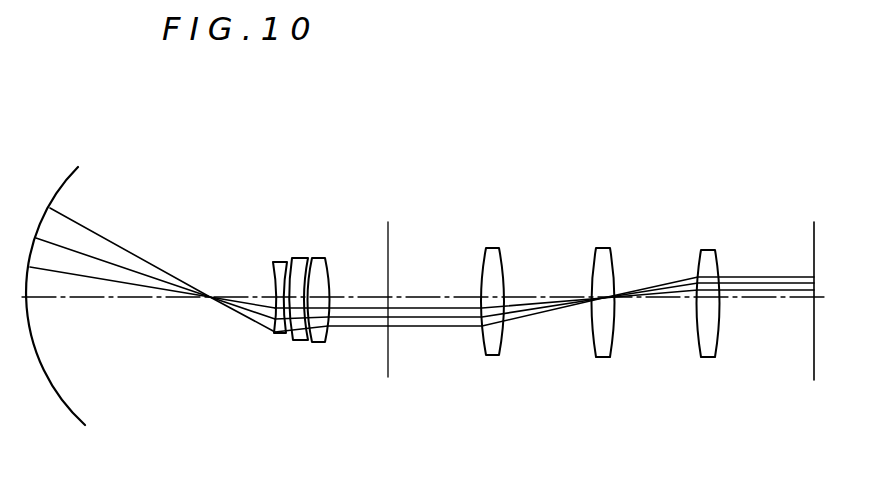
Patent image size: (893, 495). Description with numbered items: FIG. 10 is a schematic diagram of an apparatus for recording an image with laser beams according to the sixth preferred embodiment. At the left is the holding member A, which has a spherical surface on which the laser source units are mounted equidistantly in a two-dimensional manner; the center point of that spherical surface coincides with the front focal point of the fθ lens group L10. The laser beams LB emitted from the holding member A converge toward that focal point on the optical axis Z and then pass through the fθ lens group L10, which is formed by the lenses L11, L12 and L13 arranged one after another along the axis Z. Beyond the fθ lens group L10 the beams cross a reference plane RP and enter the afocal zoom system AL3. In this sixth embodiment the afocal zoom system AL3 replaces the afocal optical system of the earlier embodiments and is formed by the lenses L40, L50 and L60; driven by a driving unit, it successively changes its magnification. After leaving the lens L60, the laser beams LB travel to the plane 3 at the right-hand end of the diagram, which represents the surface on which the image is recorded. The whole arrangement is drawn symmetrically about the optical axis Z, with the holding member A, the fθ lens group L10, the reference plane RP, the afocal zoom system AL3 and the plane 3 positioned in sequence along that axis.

The holding member A is at (82, 415).
The optical axis Z is at (157, 300).
The light beam LB is at (130, 250).
The fθ lens group L10 is at (309, 360).
The lens L11 is at (282, 337).
The lens L12 is at (300, 345).
The lens L13 is at (355, 337).
The reference plane RP is at (388, 232).
The afocal zoom system AL3 is at (604, 362).
The lens L40 is at (493, 355).
The lens L50 is at (605, 357).
The lens L60 is at (697, 335).
The image plane 3 is at (814, 355).